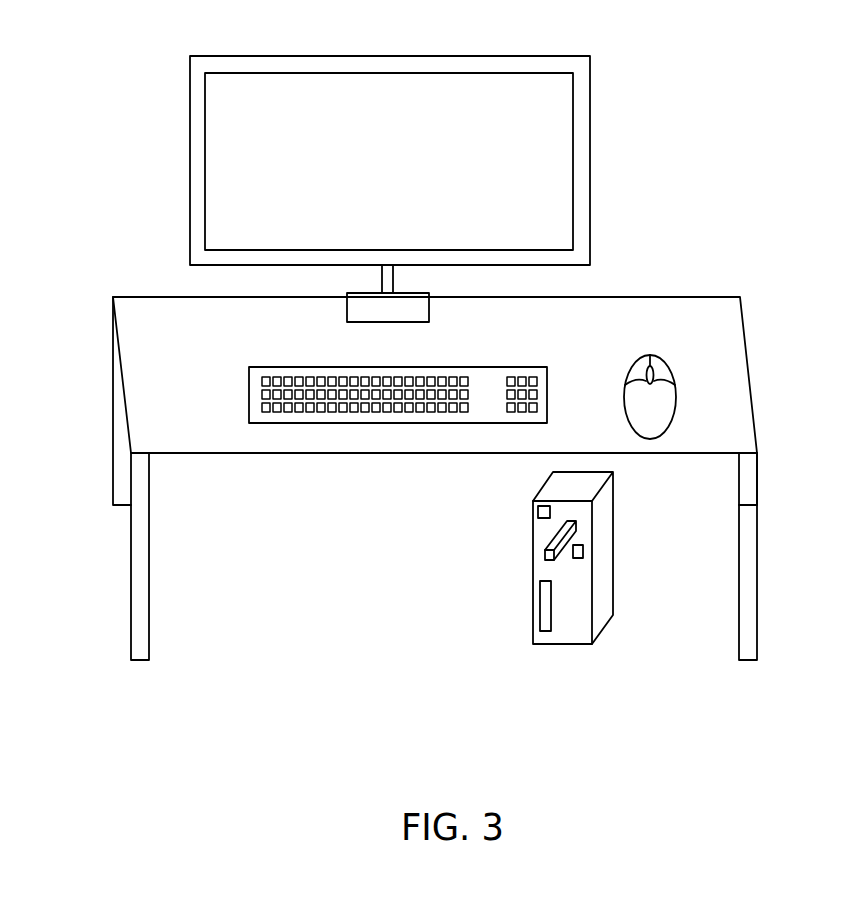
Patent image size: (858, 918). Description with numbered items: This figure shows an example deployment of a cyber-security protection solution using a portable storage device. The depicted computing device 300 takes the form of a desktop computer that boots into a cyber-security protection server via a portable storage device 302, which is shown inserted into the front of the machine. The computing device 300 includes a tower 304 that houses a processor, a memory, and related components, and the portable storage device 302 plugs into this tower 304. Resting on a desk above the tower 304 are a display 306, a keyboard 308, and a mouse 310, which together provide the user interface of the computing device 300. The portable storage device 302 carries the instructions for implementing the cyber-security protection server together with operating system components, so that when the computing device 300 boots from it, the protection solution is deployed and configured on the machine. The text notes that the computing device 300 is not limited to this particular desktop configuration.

The computing device 300 is at (582, 668).
The portable storage device 302 is at (545, 554).
The tower 304 is at (533, 605).
The display 306 is at (590, 162).
The keyboard 308 is at (269, 367).
The mouse 310 is at (668, 367).